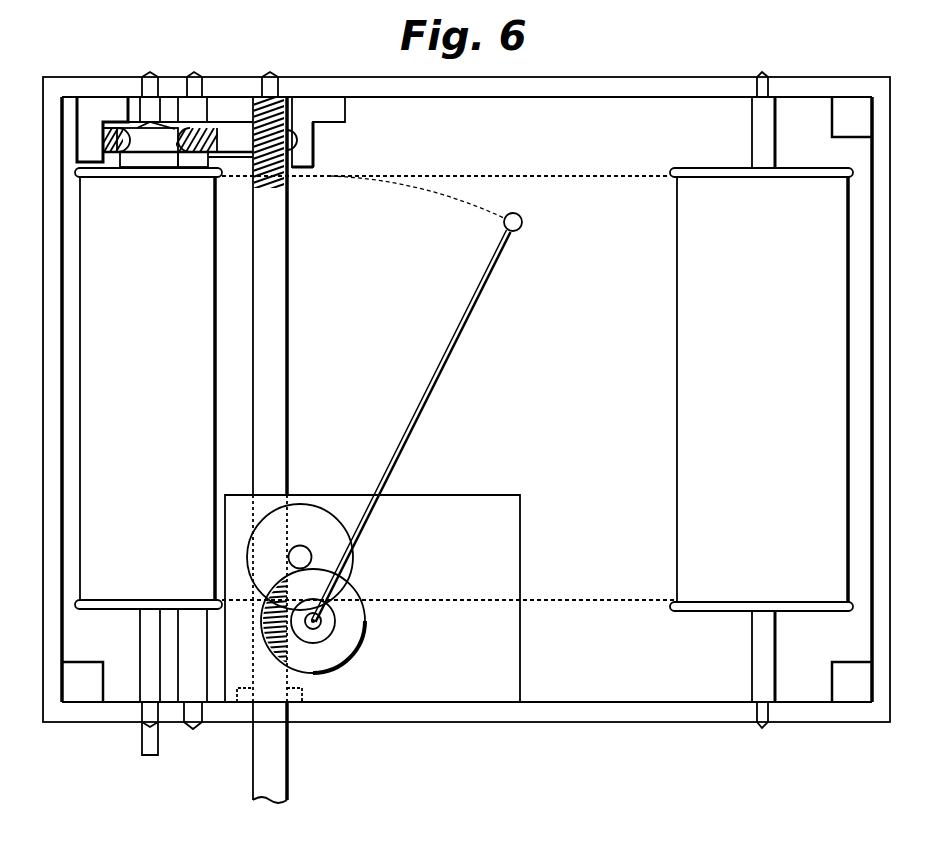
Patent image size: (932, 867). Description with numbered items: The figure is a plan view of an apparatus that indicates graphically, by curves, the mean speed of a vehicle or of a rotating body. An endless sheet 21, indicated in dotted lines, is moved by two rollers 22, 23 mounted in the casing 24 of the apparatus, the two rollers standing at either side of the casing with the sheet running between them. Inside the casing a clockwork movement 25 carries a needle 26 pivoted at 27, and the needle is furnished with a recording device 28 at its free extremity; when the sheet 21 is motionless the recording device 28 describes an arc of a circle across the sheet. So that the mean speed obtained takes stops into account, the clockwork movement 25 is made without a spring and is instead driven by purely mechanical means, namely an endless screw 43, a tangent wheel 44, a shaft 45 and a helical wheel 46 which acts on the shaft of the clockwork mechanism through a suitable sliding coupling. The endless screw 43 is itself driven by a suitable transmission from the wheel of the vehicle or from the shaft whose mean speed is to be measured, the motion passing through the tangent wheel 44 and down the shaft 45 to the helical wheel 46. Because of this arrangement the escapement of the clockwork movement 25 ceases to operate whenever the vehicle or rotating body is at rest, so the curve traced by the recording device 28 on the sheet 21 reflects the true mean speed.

The endless sheet 21 is at (559, 184).
The roller 22 is at (822, 396).
The roller 23 is at (100, 310).
The casing 24 is at (850, 716).
The clockwork movement 25 is at (505, 661).
The needle 26 is at (434, 382).
The pivot 27 is at (326, 619).
The recording device 28 is at (518, 222).
The endless screw 43 is at (190, 132).
The tangent wheel 44 is at (245, 140).
The shaft 45 is at (275, 278).
The helical wheel 46 is at (355, 629).